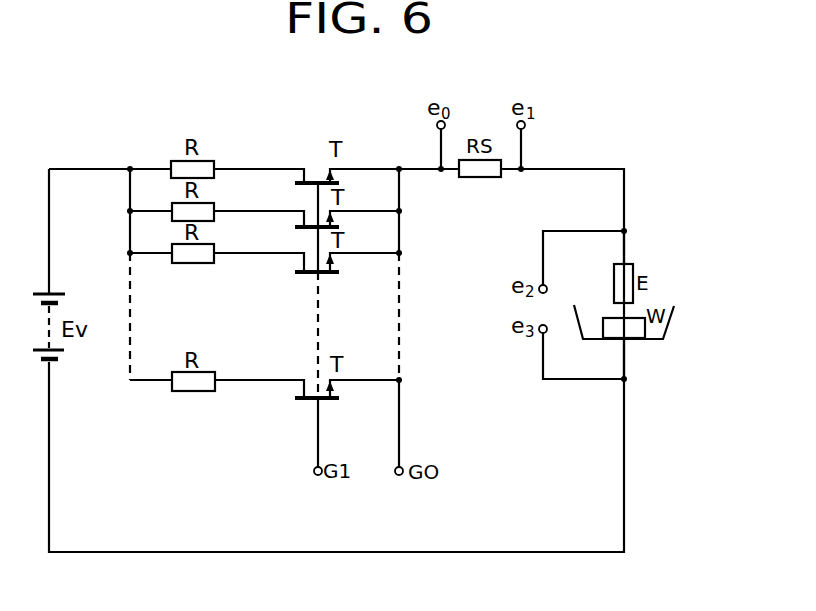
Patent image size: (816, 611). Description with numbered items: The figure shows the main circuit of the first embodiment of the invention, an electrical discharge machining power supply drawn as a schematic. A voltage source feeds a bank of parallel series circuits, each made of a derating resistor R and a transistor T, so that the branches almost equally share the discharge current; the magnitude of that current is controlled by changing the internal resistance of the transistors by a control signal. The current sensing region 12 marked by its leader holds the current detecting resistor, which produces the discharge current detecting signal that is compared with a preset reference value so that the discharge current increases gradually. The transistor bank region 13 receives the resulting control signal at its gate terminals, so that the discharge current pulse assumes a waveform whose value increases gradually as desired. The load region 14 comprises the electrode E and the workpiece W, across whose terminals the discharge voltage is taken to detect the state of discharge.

The resistor RS circuit 12 is at (483, 118).
The transistor switching circuit 13 is at (389, 435).
The electrode E and bath W 14 is at (633, 248).